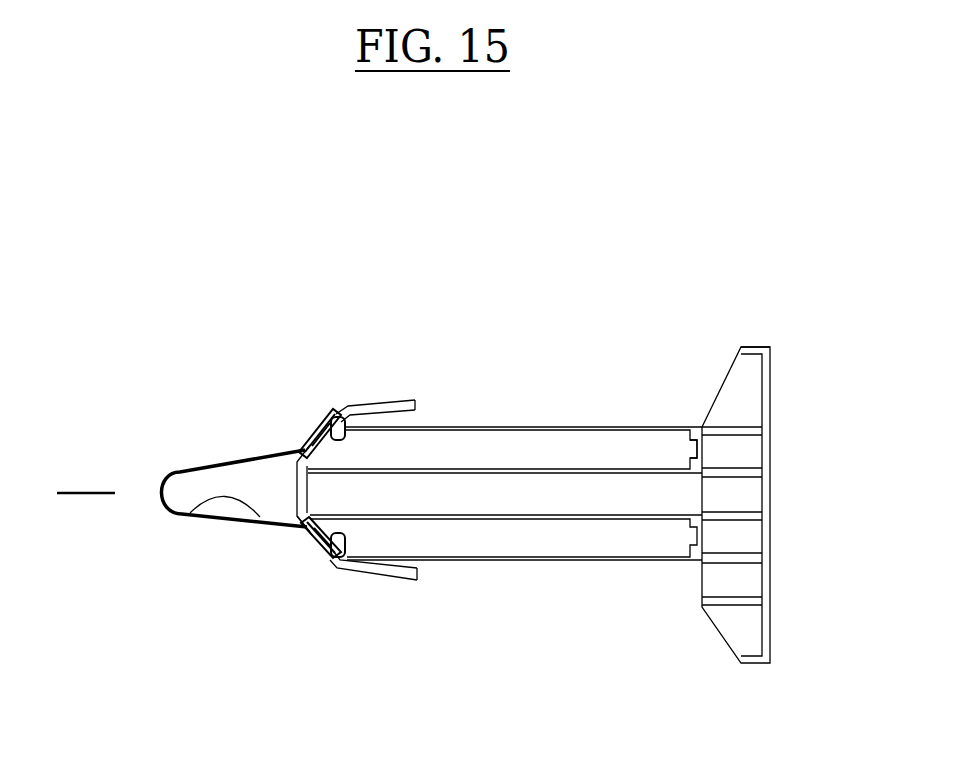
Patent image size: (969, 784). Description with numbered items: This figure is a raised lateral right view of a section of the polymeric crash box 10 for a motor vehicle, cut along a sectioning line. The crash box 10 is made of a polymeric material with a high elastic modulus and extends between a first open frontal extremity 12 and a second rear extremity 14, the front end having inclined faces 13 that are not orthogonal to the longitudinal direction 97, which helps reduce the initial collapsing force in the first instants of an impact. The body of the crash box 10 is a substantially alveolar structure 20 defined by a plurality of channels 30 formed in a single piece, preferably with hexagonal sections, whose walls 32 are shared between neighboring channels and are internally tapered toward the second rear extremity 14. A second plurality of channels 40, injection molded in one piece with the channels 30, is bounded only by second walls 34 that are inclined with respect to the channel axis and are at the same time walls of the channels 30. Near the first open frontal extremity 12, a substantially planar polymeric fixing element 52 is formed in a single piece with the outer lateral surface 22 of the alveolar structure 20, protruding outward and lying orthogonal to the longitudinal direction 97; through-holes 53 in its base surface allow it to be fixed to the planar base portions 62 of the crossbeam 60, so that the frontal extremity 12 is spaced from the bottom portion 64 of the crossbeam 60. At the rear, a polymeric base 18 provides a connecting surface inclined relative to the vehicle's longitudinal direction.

The crash box 10 is at (146, 293).
The first open frontal extremity 12 is at (307, 490).
The faces 13 is at (315, 543).
The second rear extremity 14 is at (700, 448).
The polymeric base 18 is at (763, 473).
The alveolar structure 20 is at (656, 306).
The outer lateral surface 22 is at (472, 427).
The channels 30 is at (557, 427).
The walls 32 is at (546, 461).
The second walls 34 is at (490, 472).
The second plurality of channels 40 is at (606, 473).
The substantially planar polymeric fixing element 52 is at (305, 447).
The through-holes 53 is at (340, 437).
The crossbeam 60 is at (146, 468).
The substantially planar base portions 62 is at (307, 447).
The bottom portion 64 is at (190, 515).
The longitudinal direction 97 is at (70, 487).